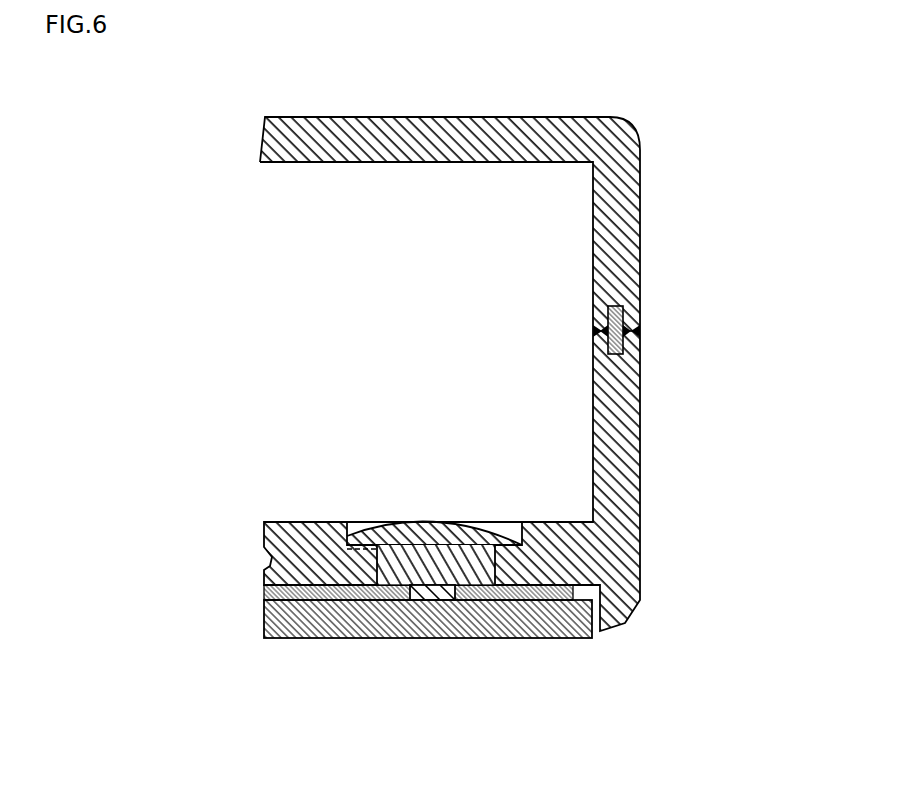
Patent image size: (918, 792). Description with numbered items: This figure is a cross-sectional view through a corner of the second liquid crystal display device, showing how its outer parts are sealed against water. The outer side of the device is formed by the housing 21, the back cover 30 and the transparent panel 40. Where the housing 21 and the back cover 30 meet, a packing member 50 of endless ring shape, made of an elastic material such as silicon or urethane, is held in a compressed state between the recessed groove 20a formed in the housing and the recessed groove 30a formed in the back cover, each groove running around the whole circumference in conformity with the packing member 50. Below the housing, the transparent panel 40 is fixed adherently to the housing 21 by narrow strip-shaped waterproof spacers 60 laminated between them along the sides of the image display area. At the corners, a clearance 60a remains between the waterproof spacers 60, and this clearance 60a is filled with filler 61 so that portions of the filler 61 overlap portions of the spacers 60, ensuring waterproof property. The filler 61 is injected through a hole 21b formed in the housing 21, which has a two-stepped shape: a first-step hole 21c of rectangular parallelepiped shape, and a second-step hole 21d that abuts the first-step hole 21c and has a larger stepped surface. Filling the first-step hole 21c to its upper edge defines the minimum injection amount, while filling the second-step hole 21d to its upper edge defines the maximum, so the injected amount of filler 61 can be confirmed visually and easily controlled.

The back cover 30 is at (617, 193).
The recessed groove 30a is at (622, 303).
The packing member 50 is at (625, 322).
The recessed groove 20a is at (622, 355).
The housing 21 is at (630, 485).
The hole 21b is at (288, 382).
The first-step hole 21c is at (390, 558).
The second-step hole 21d is at (350, 528).
The waterproof spacer 60 is at (290, 592).
The filler 61 is at (415, 592).
The clearance 60a is at (430, 600).
The transparent panel 40 is at (503, 622).